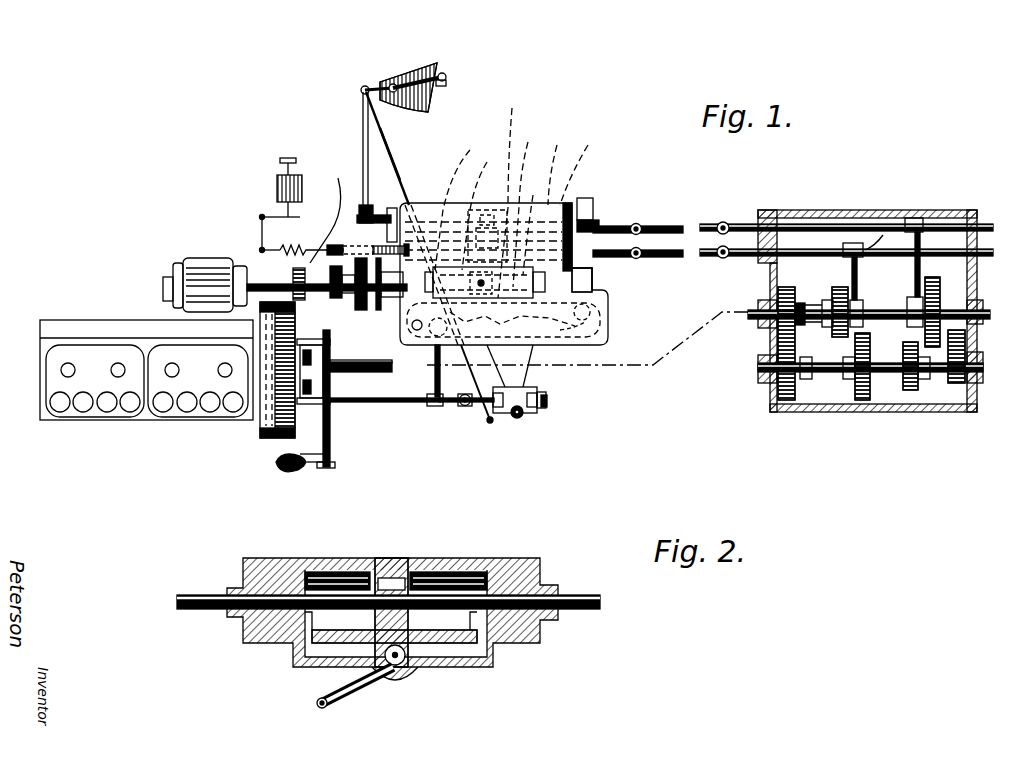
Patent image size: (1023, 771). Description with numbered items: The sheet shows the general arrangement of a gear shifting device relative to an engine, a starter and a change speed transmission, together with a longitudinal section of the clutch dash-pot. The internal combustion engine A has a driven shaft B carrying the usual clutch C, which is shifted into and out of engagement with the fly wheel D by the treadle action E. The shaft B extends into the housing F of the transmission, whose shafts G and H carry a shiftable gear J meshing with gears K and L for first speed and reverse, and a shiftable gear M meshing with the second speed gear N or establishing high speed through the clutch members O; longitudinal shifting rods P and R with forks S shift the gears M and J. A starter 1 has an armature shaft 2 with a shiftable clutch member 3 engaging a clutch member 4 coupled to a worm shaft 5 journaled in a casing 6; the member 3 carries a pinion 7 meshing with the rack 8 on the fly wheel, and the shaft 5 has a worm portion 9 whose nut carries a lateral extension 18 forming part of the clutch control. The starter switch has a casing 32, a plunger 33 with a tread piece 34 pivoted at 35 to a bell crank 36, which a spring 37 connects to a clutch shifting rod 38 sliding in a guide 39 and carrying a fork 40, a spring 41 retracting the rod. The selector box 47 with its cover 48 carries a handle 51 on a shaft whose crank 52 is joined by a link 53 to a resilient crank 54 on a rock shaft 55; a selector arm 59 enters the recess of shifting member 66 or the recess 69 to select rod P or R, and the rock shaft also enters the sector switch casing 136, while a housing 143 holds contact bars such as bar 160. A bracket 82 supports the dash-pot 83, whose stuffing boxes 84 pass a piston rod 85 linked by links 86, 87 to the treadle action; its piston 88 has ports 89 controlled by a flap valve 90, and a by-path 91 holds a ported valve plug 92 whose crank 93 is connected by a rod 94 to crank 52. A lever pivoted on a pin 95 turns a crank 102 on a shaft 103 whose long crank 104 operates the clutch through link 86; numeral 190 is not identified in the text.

In FIG. 1, the internal combustion engine A is at (90, 331).
In FIG. 1, the starter 1 is at (201, 266).
In FIG. 1, the armature shaft 2 is at (272, 283).
In FIG. 1, the shiftable clutch member 3 is at (302, 300).
In FIG. 1, the clutch member 4 is at (355, 306).
In FIG. 1, the worm or screw shaft 5 is at (394, 298).
In FIG. 1, the casing 6 is at (500, 201).
In FIG. 1, the pinion 7 is at (298, 250).
In FIG. 1, the circular rack or large gear 8 is at (282, 462).
In FIG. 1, the screw or worm portion 9 is at (533, 224).
In FIG. 1, the lateral extension 18 is at (594, 350).
In FIG. 1, the starter switch casing 32 is at (277, 180).
In FIG. 1, the vertical plunger 33 is at (276, 176).
In FIG. 1, the tread piece 34 is at (289, 158).
In FIG. 1, the pivotal connection 35 is at (293, 217).
In FIG. 1, the bell crank 36 is at (260, 218).
In FIG. 1, the spring 37 is at (260, 242).
In FIG. 1, the clutch shifting rod 38 is at (325, 210).
In FIG. 1, the guide 39 is at (358, 220).
In FIG. 1, the fork 40 is at (330, 255).
In FIG. 1, the spring 41 is at (403, 185).
In FIG. 1, the sector shaped casing or box 47 is at (399, 65).
In FIG. 1, the lid or cover 48 is at (418, 68).
In FIG. 1, the operating crank or handle 51 is at (445, 75).
In FIG. 1, the crank 52 is at (366, 84).
In FIG. 1, the rod or link 53 is at (362, 128).
In FIG. 1, the resilient or flexible crank 54 is at (370, 206).
In FIG. 1, the rock shaft 55 is at (459, 200).
In FIG. 1, the selector arm 59 is at (514, 191).
In FIG. 1, the shifting member 66 is at (481, 206).
In FIG. 1, the recess 69 is at (527, 204).
In FIG. 1, the bracket 82 is at (540, 386).
In FIG. 1, the dash-pot 83 is at (540, 410).
In FIG. 2, the dash-pot 83 is at (328, 558).
In FIG. 2, the stuffing boxes 84 is at (255, 632).
In FIG. 2, the piston rod 85 is at (582, 609).
In FIG. 1, the link 86 is at (456, 406).
In FIG. 1, the link 87 is at (404, 403).
In FIG. 2, the piston 88 is at (434, 558).
In FIG. 2, the ports 89 is at (390, 572).
In FIG. 2, the valvular member 90 is at (374, 640).
In FIG. 2, the by-path 91 is at (458, 650).
In FIG. 1, the ported valve plug 92 is at (518, 420).
In FIG. 2, the ported valve plug 92 is at (394, 670).
In FIG. 1, the crank 93 is at (506, 423).
In FIG. 2, the crank 93 is at (342, 697).
In FIG. 1, the rod 94 is at (396, 142).
In FIG. 1, the pin 95 is at (592, 312).
In FIG. 1, the crank 102 is at (412, 340).
In FIG. 1, the shaft 103 is at (592, 280).
In FIG. 1, the long crank 104 is at (438, 406).
In FIG. 1, the sector shaped switch casing 136 is at (590, 198).
In FIG. 1, the housing 143 is at (530, 298).
In FIG. 1, the contact bar 160 is at (447, 86).
In FIG. 1, the port 190 is at (600, 328).
In FIG. 1, the driven shaft B is at (372, 373).
In FIG. 1, the clutch C is at (315, 427).
In FIG. 1, the fly wheel D is at (262, 436).
In FIG. 1, the treadle action E is at (327, 469).
In FIG. 1, the housing or casing F is at (842, 210).
In FIG. 1, the transmission shaft G is at (981, 319).
In FIG. 1, the transmission shaft H is at (800, 396).
In FIG. 1, the shiftable gear J is at (942, 290).
In FIG. 1, the gear K is at (911, 394).
In FIG. 1, the gear L is at (957, 385).
In FIG. 1, the shiftable gear M is at (836, 288).
In FIG. 1, the second speed gear N is at (860, 404).
In FIG. 1, the clutch members O is at (824, 324).
In FIG. 1, the shifting rod P is at (990, 224).
In FIG. 1, the shifting rod R is at (1000, 244).
In FIG. 1, the forks S is at (888, 246).